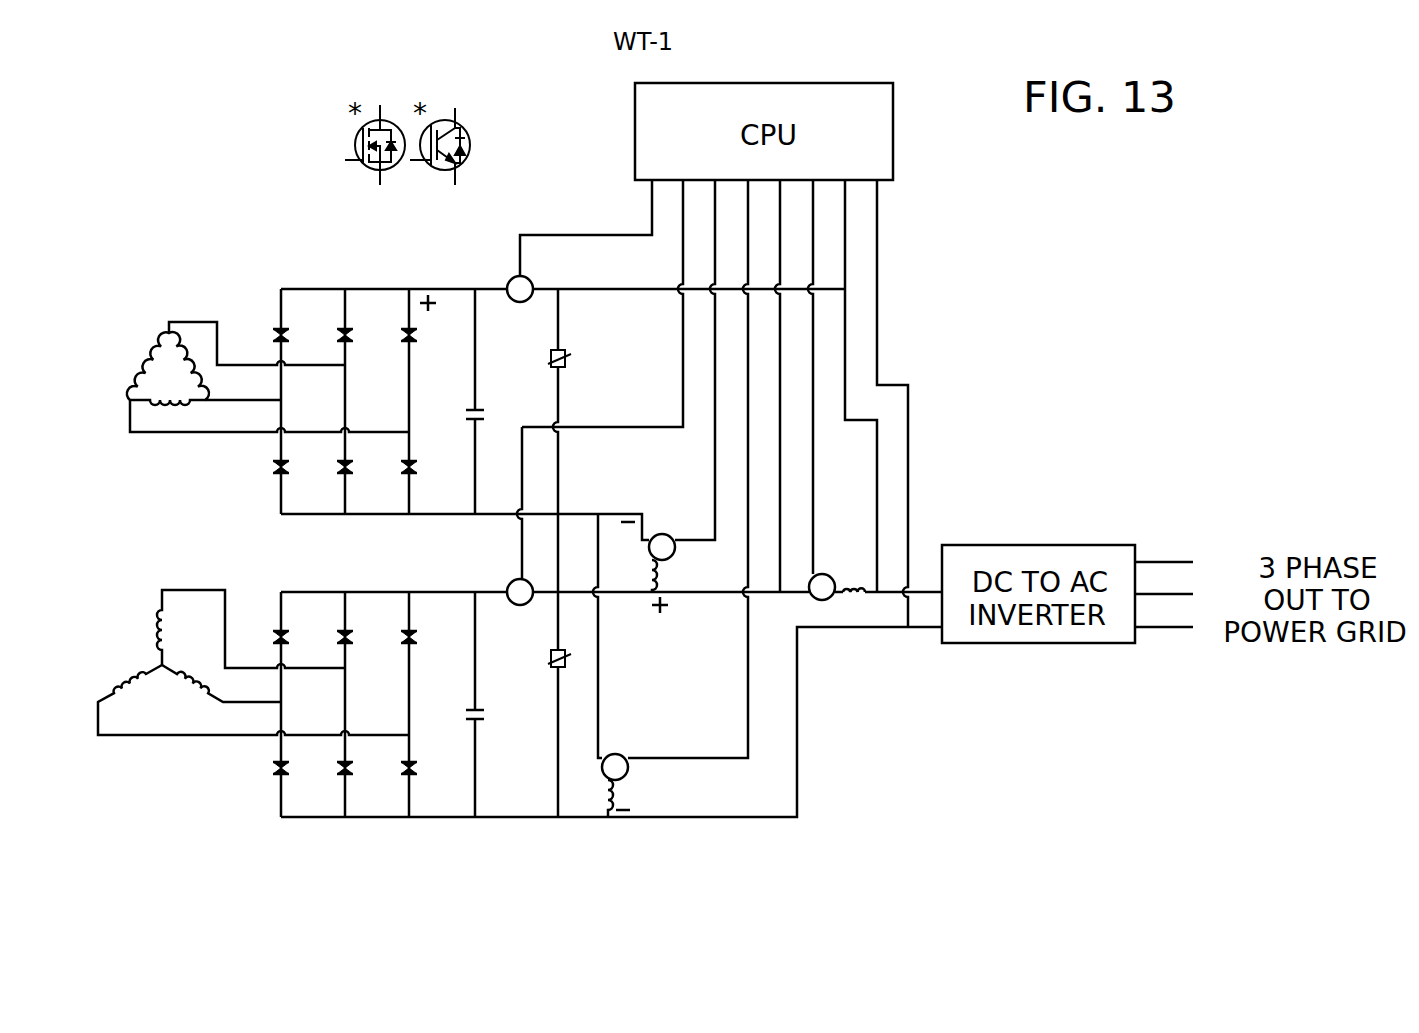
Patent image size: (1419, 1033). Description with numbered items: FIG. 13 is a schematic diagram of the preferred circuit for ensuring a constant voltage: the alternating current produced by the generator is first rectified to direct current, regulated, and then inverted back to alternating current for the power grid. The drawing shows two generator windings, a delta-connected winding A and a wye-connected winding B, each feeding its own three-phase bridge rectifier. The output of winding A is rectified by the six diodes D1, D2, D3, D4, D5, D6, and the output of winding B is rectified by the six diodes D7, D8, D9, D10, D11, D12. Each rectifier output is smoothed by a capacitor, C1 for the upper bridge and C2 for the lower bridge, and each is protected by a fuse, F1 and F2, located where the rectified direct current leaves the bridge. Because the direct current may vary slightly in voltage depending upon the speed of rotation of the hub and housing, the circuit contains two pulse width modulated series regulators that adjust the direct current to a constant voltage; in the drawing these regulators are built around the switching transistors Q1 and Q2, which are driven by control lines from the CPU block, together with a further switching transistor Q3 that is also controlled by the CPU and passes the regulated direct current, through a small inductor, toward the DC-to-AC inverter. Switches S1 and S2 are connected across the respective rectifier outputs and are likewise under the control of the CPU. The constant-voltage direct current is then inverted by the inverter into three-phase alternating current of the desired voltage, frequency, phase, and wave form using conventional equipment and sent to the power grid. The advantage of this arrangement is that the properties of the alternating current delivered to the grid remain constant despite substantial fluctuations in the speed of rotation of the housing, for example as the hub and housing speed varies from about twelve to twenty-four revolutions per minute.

The first delta-connected generator winding A is at (268, 377).
The second wye-connected generator winding B is at (253, 662).
The rectifier diode D1 is at (268, 324).
The rectifier diode D2 is at (332, 324).
The rectifier diode D3 is at (397, 324).
The rectifier diode D4 is at (268, 455).
The rectifier diode D5 is at (332, 455).
The rectifier diode D6 is at (397, 455).
The rectifier diode D7 is at (268, 626).
The rectifier diode D8 is at (332, 626).
The rectifier diode D9 is at (397, 626).
The rectifier diode D10 is at (263, 757).
The rectifier diode D11 is at (328, 757).
The rectifier diode D12 is at (392, 757).
The filter capacitor C1 is at (466, 401).
The filter capacitor C2 is at (465, 704).
The fuse F1 is at (509, 280).
The fuse F2 is at (508, 583).
The switch S1 is at (549, 401).
The switch S2 is at (547, 665).
The switching transistor Q1 is at (660, 561).
The switching transistor Q2 is at (623, 665).
The switching transistor Q3 is at (824, 587).